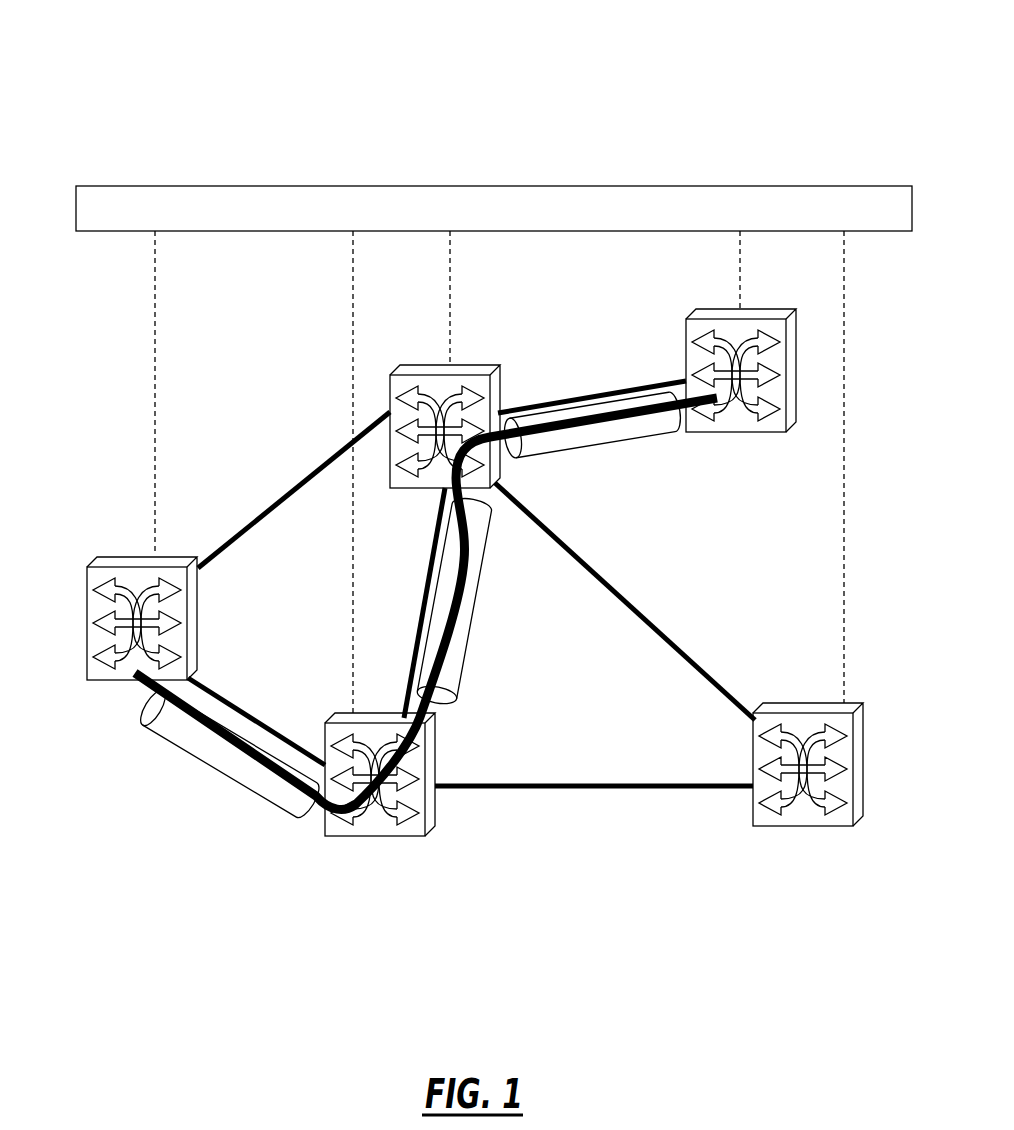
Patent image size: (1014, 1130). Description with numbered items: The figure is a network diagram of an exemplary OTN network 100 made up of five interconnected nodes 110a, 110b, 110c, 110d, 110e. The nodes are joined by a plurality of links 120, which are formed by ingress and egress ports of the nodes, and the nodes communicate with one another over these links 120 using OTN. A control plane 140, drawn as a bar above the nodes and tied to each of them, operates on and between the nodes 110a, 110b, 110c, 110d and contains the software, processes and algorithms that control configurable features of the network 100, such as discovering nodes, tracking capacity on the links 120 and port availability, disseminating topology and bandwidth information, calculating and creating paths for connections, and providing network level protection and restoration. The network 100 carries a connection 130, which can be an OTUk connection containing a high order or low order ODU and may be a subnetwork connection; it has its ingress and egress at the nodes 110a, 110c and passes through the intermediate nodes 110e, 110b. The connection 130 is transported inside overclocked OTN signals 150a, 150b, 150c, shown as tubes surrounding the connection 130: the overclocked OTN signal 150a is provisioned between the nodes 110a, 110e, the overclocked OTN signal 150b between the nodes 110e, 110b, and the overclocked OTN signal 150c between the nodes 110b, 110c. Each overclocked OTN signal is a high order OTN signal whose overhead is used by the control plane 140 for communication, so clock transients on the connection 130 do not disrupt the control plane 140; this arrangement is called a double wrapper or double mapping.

The OTN network 100 is at (178, 72).
The control plane 140 is at (650, 185).
The node 110a is at (87, 615).
The node 110b is at (483, 363).
The node 110c is at (753, 433).
The node 110d is at (812, 827).
The node 110e is at (325, 833).
The link 120 is at (280, 507).
The connection 130 is at (457, 623).
The overclocked OTN signal 150a is at (223, 780).
The overclocked OTN signal 150b is at (463, 688).
The overclocked OTN signal 150c is at (648, 440).